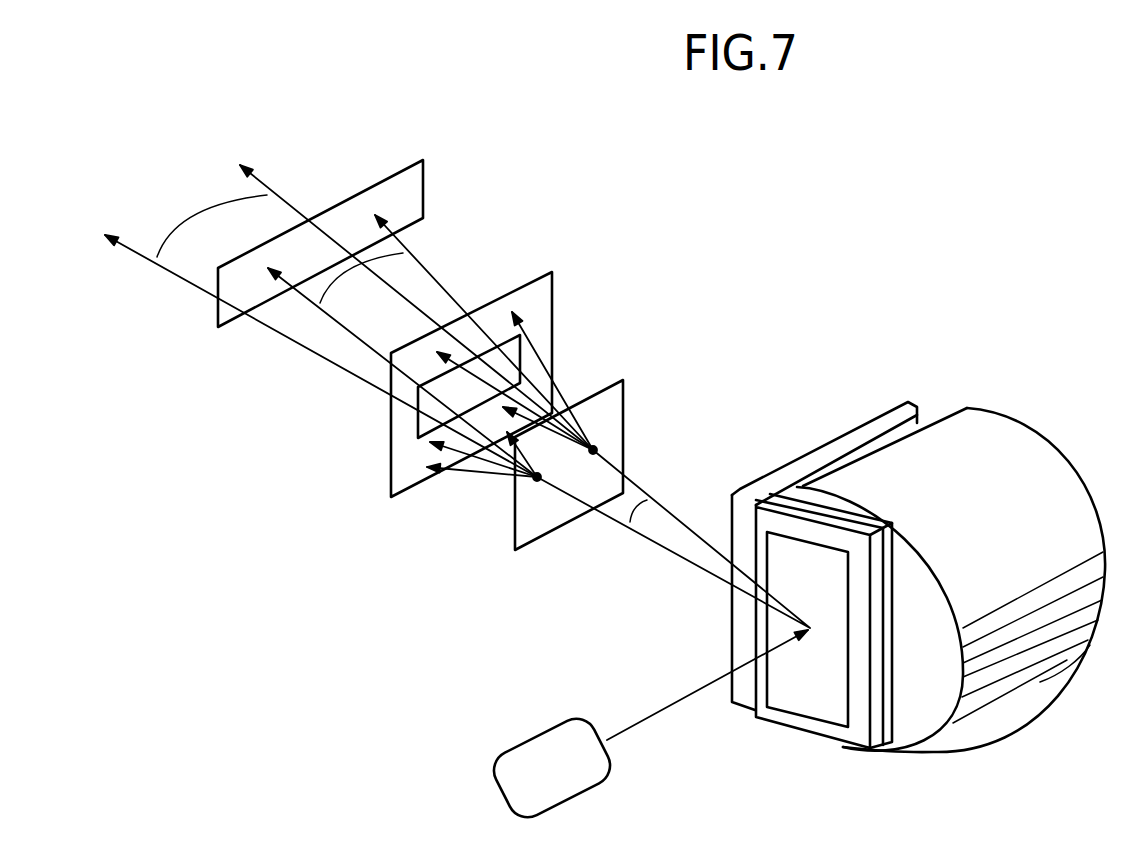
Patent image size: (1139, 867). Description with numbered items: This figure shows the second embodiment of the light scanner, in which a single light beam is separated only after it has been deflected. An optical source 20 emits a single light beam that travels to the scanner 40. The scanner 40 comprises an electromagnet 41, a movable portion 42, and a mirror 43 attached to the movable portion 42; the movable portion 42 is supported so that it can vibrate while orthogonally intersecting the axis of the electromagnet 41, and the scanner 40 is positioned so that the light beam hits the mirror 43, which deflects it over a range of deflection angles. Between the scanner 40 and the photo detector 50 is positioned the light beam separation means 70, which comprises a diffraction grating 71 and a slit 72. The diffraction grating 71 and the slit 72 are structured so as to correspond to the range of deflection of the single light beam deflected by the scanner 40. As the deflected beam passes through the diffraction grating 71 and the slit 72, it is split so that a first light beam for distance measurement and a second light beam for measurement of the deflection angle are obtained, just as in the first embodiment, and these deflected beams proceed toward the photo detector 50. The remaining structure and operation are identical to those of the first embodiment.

The optical source 20 is at (585, 793).
The scanner 40 is at (1040, 682).
The electromagnet 41 is at (1055, 452).
The movable portion 42 is at (882, 753).
The mirror 43 is at (780, 543).
The photo detector 50 is at (420, 167).
The light beam separation means 70 is at (747, 217).
The diffraction grating 71 is at (627, 398).
The slit 72 is at (555, 292).